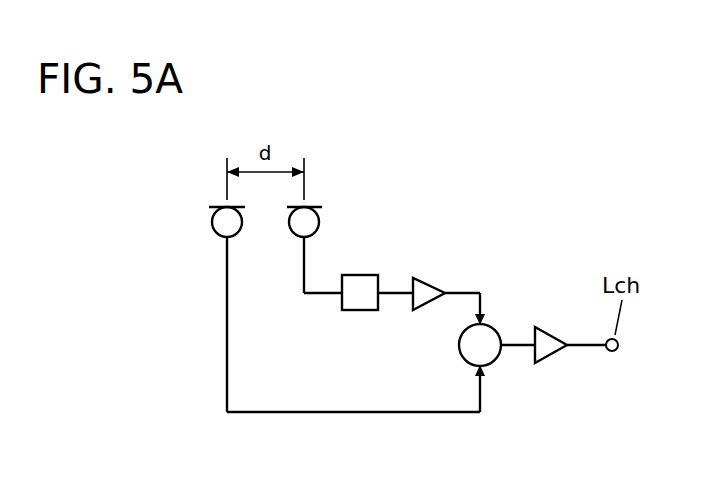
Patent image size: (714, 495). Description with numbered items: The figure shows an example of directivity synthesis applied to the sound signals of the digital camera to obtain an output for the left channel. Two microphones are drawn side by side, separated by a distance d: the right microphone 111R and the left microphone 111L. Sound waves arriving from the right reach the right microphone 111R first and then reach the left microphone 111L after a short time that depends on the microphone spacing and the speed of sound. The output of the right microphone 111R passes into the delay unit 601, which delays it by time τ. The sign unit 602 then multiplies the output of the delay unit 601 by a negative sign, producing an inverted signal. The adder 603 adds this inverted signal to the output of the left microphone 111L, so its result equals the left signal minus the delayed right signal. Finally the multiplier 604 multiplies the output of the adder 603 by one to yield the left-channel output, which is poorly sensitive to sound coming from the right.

The left microphone 111L is at (214, 231).
The right microphone 111R is at (320, 215).
The delay unit 601 is at (363, 272).
The sign unit 602 is at (435, 282).
The adder 603 is at (493, 365).
The multiplier 604 is at (550, 358).